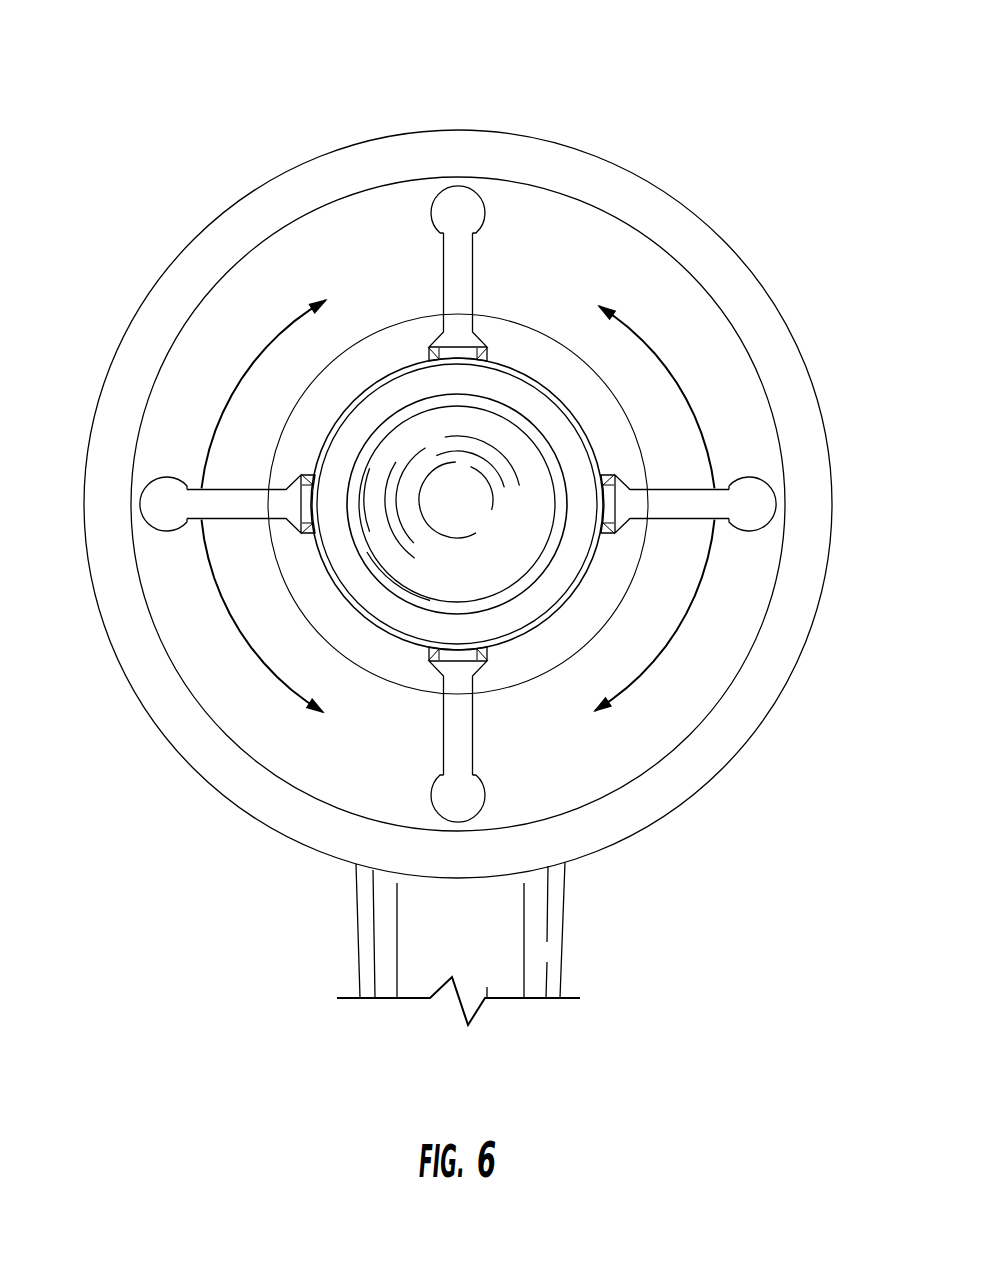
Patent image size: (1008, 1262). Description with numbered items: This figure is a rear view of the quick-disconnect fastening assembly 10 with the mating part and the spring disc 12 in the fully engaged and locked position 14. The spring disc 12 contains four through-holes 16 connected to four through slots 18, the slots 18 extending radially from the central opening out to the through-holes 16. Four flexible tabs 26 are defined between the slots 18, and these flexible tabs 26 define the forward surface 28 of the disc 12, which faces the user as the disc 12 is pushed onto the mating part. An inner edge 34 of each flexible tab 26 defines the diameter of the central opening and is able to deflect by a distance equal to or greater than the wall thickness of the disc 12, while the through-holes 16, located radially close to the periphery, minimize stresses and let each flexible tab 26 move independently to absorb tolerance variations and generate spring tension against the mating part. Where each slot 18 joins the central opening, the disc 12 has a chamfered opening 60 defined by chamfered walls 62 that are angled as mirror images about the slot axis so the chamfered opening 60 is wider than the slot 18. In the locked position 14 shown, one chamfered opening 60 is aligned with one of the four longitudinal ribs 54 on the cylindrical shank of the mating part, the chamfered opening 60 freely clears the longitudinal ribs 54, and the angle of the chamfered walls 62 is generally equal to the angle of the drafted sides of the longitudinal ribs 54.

The quick-disconnect fastening assembly 10 is at (461, 515).
The spring disc 12 is at (458, 504).
The locked position 14 is at (457, 488).
The through-holes 16 is at (461, 506).
The through slots 18 is at (466, 501).
The flexible tabs 26 is at (470, 492).
The forward surface 28 is at (489, 504).
The inner edge 34 is at (458, 504).
The longitudinal ribs 54 is at (463, 526).
The chamfered opening 60 is at (489, 474).
The chamfered walls 62 is at (458, 456).